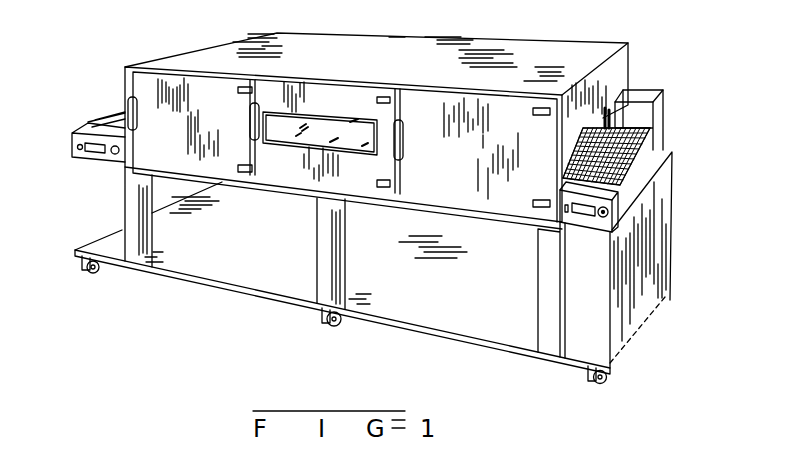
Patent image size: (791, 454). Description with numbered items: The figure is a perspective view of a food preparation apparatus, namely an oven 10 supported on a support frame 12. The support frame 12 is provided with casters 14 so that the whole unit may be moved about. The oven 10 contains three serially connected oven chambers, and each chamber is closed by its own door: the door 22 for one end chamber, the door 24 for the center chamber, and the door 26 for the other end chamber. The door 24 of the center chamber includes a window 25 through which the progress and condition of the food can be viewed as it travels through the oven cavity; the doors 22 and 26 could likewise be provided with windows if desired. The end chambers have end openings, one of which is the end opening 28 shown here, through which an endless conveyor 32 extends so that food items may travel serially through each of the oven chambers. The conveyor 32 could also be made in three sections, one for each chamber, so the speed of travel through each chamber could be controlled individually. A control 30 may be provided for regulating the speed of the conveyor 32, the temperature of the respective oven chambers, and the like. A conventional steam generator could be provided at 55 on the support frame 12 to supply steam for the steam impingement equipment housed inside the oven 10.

The oven 10 is at (588, 32).
The support frame 12 is at (117, 193).
The casters 14 is at (90, 277).
The door 22 is at (231, 117).
The door 24 is at (351, 111).
The window 25 is at (313, 133).
The door 26 is at (454, 167).
The end opening 28 is at (602, 120).
The control 30 is at (598, 216).
The endless conveyor 32 is at (628, 136).
The steam generator 55 is at (578, 273).